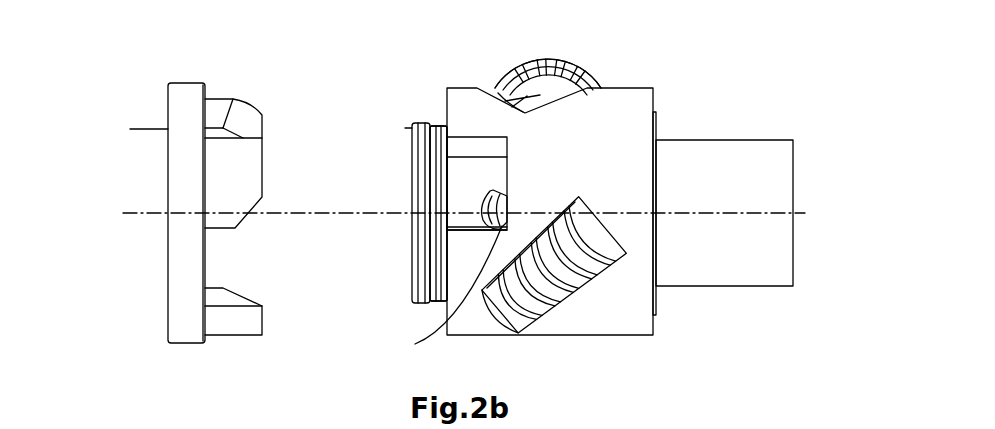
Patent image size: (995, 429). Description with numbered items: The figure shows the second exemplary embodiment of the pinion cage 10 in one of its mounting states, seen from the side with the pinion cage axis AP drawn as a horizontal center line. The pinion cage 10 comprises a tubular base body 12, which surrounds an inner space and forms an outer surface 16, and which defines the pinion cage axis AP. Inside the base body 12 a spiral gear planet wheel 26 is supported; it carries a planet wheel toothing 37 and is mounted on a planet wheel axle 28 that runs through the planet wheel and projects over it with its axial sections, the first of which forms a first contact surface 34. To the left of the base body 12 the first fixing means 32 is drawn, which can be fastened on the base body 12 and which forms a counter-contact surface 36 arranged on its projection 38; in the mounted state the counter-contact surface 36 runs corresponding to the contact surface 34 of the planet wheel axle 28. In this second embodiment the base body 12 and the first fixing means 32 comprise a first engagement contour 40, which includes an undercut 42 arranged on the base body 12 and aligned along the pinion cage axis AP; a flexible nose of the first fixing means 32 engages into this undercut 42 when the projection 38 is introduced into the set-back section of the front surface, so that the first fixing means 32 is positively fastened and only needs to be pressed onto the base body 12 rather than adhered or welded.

The pinion cage 10 is at (832, 125).
The tubular base body 12 is at (690, 153).
The outer surface 16 is at (627, 88).
The spiral gear planet wheel 26 is at (550, 65).
The planet wheel axle 28 is at (415, 295).
The first fixing means 32 is at (168, 267).
The first contact surface 34 is at (495, 203).
The counter-contact surface 36 is at (243, 227).
The planet wheel toothing 37 is at (548, 73).
The projection 38 is at (217, 112).
The first engagement contour 40 is at (438, 125).
The undercut 42 is at (438, 213).
The pinion cage axis AP is at (293, 213).